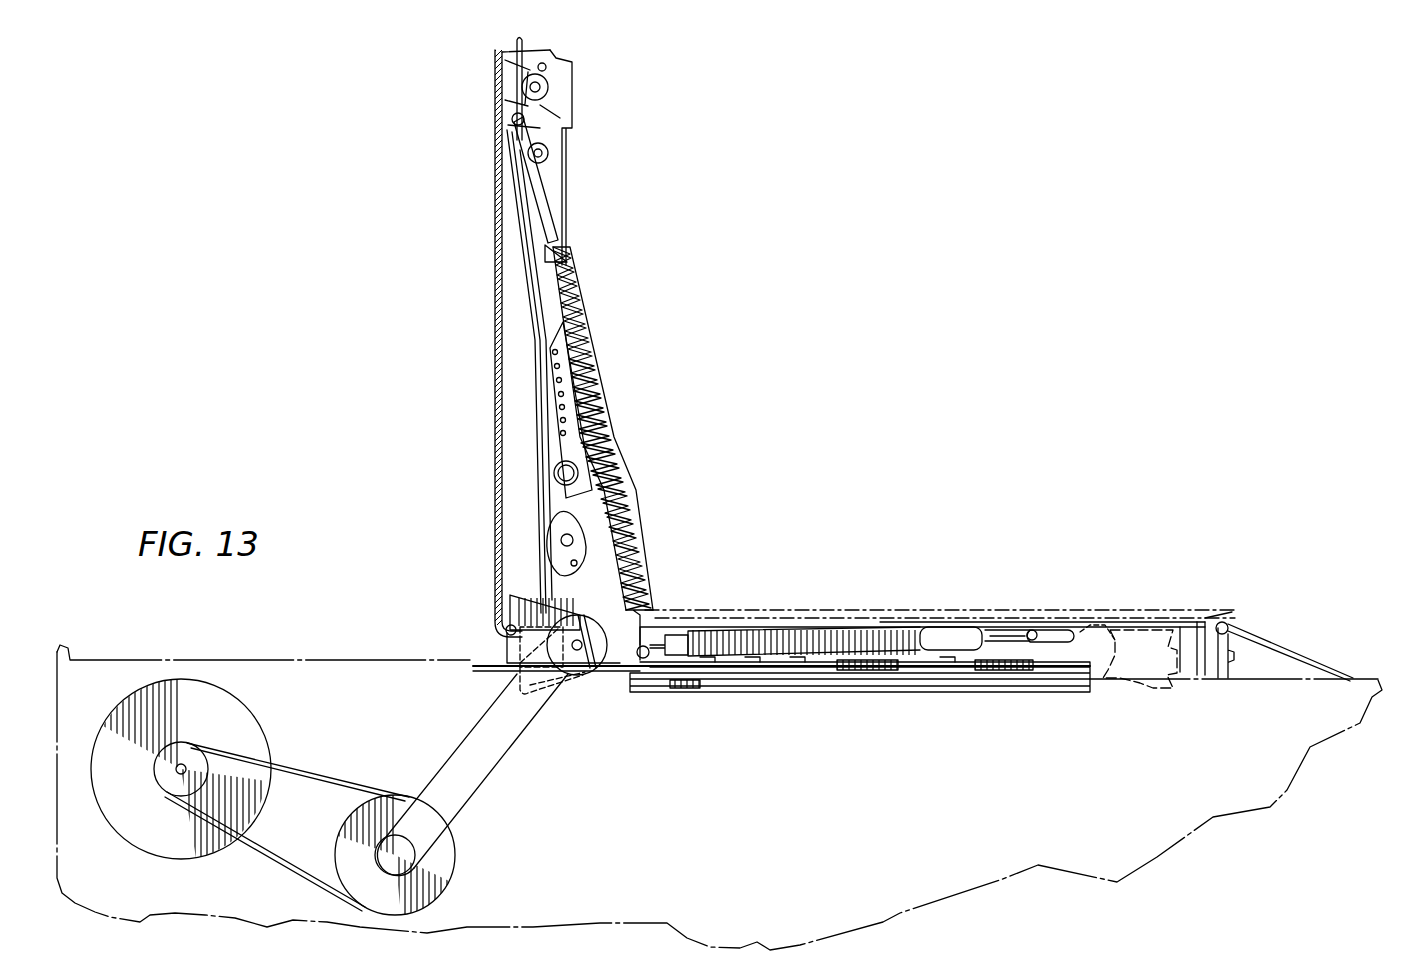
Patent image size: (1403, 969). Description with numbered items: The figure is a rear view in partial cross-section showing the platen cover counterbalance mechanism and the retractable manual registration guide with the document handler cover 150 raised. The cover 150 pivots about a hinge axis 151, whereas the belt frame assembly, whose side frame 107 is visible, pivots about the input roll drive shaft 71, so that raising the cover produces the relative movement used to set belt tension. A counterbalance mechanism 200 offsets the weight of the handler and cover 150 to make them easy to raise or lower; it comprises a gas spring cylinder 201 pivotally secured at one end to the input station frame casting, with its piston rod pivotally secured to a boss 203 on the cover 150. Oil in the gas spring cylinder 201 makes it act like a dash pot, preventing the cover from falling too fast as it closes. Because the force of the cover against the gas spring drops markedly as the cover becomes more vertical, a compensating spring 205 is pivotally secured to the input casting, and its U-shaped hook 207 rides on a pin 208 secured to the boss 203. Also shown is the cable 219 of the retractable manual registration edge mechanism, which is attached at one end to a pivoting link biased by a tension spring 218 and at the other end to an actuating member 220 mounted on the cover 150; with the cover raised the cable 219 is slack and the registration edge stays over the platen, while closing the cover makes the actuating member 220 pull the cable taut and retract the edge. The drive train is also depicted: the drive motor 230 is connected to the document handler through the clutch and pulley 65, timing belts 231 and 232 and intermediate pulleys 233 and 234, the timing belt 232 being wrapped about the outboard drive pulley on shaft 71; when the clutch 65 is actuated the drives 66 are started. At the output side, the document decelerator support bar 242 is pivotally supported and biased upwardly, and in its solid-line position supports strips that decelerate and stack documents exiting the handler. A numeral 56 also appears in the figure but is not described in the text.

The strut 56 is at (1325, 661).
The clutch and pulley 65 is at (166, 778).
The drives 66 is at (246, 849).
The input roll drive shaft 71 is at (571, 625).
The side frame 107 is at (563, 183).
The document handler cover 150 is at (497, 490).
The hinge axis 151 is at (503, 632).
The counterbalance mechanism 200 is at (630, 468).
The gas spring cylinder 201 is at (960, 628).
The boss 203 is at (507, 120).
The compensating spring 205 is at (632, 492).
The U-shaped hook 207 is at (517, 157).
The pin 208 is at (497, 103).
The tension spring 218 is at (870, 670).
The cable 219 is at (592, 667).
The actuating member 220 is at (520, 592).
The drive motor 230 is at (247, 733).
The timing belt 231 is at (289, 778).
The timing belt 232 is at (493, 785).
The intermediate pulley 233 is at (407, 863).
The intermediate pulley 234 is at (447, 845).
The document decelerator support bar 242 is at (1230, 656).